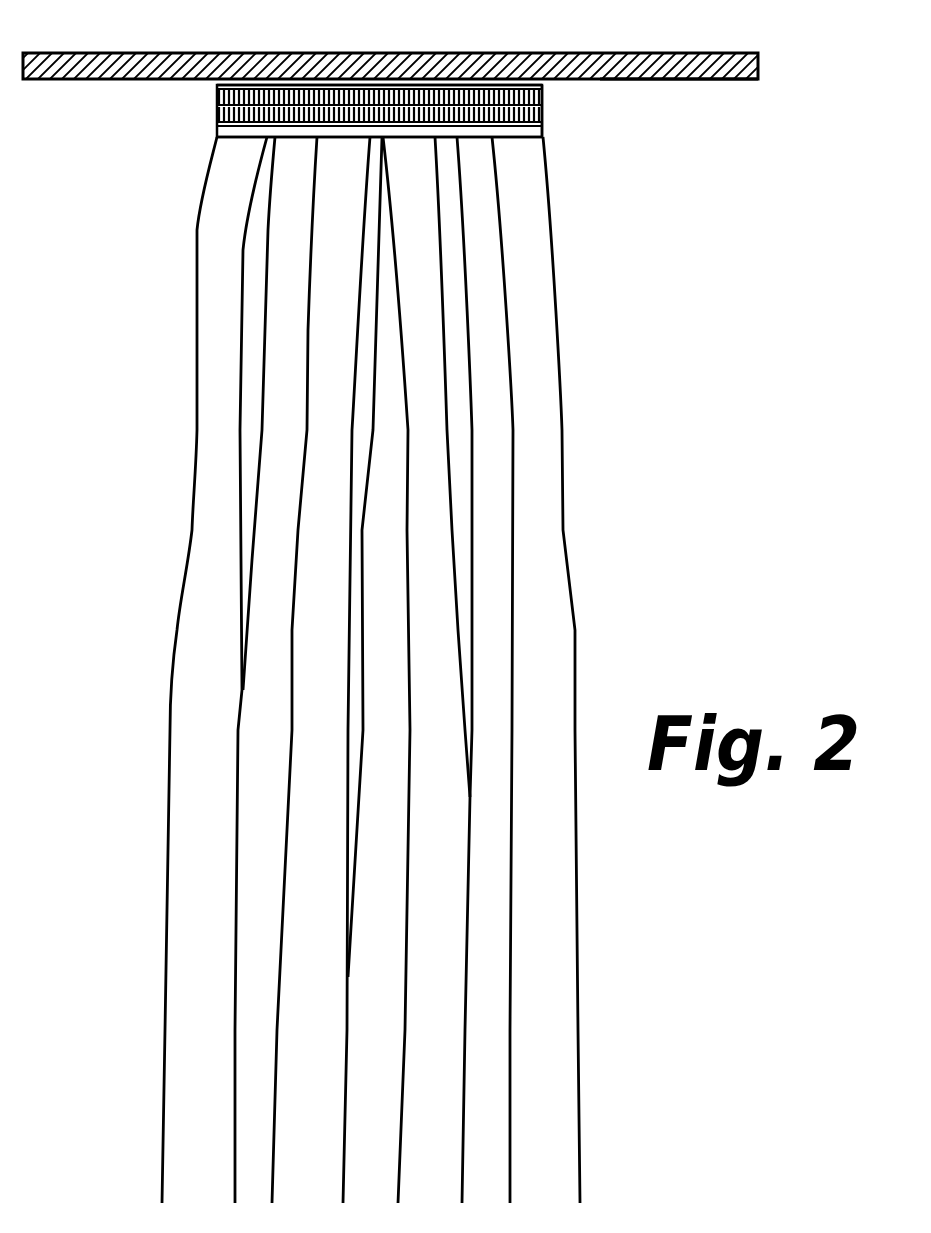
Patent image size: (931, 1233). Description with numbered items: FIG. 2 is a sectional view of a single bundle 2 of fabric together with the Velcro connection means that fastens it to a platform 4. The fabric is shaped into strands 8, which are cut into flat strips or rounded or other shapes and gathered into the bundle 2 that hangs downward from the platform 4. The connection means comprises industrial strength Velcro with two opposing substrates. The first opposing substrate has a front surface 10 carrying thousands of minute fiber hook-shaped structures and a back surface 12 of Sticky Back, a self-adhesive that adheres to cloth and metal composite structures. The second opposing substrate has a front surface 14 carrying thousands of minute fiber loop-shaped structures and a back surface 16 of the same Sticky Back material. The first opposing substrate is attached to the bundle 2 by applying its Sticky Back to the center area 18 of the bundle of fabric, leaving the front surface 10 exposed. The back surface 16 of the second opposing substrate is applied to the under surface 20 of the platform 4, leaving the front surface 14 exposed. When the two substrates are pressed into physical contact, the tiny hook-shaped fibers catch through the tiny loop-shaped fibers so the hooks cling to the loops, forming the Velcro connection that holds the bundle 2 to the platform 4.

The bundle 2 is at (403, 670).
The platform 4 is at (393, 48).
The strands 8 is at (520, 470).
The front surface 10 is at (548, 113).
The back surface 12 is at (545, 131).
The front surface 14 is at (212, 105).
The back surface 16 is at (213, 84).
The center area 18 is at (520, 150).
The under surface 20 is at (705, 90).